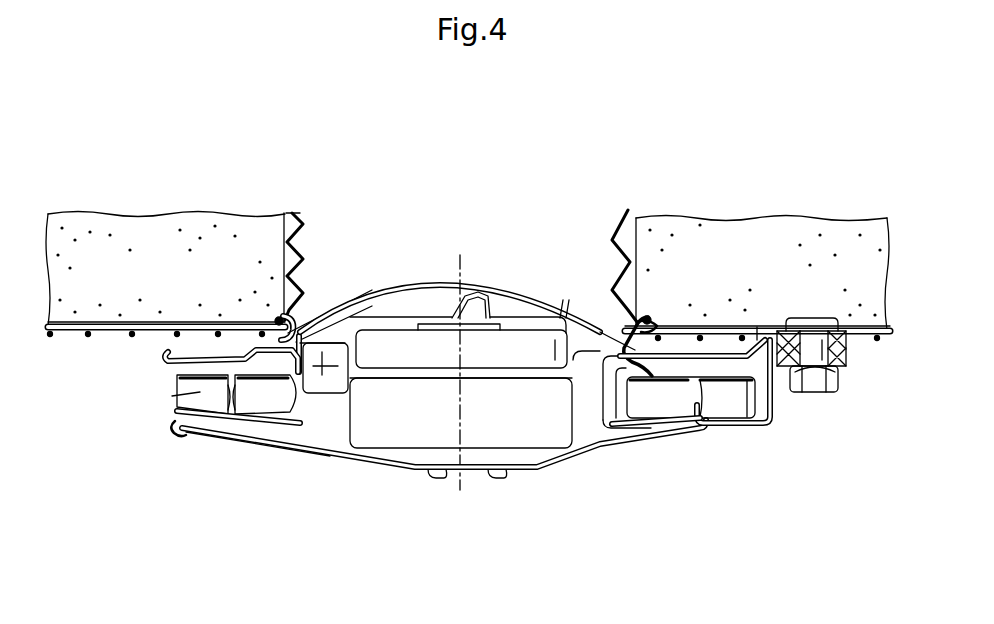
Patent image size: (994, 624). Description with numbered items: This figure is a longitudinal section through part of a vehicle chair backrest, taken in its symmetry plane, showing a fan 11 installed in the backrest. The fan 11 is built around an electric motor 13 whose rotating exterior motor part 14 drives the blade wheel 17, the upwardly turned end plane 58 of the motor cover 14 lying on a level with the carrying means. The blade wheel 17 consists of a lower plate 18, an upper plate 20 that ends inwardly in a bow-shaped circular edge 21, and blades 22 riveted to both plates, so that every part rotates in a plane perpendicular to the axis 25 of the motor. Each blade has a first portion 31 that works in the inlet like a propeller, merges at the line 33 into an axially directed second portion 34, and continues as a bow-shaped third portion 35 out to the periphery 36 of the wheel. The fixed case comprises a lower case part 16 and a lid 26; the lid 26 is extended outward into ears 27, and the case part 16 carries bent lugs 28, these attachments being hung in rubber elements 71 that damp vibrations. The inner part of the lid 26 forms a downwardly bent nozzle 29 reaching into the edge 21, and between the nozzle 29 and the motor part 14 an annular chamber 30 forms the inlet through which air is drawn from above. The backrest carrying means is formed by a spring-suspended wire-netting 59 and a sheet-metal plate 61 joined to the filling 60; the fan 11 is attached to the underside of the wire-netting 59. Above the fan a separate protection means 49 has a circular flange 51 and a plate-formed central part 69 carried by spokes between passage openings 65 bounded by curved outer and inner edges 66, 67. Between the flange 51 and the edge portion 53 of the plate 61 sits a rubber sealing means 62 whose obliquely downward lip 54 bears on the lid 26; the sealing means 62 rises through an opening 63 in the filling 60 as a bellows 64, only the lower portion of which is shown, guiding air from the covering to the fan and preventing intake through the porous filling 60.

The fan 11 is at (423, 507).
The electric motor 13 is at (505, 430).
The exterior motor part 14 is at (385, 419).
The lower case part 16 is at (572, 462).
The blade wheel 17 is at (644, 427).
The lower plate 18 is at (196, 420).
The upper plate 20 is at (214, 400).
The circular edge 21 is at (268, 402).
The blades 22 is at (286, 405).
The axis 25 is at (462, 266).
The lid 26 is at (723, 327).
The ears 27 is at (758, 327).
The lugs 28 is at (767, 400).
The nozzle 29 is at (313, 318).
The annular chamber 30 is at (326, 345).
The first blade portion 31 is at (318, 370).
The line 33 is at (291, 415).
The second blade portion 34 is at (323, 395).
The third blade portion 35 is at (240, 420).
The periphery 36 is at (170, 398).
The protection means 49 is at (433, 291).
The flange 51 is at (652, 318).
The edge portion 53 is at (678, 327).
The lip 54 is at (685, 428).
The end plane 58 is at (513, 330).
The wire-netting 59 is at (85, 336).
The filling 60 is at (810, 233).
The sheet-metal plate 61 is at (150, 338).
The sealing means 62 is at (603, 443).
The opening 63 is at (284, 312).
The bellows 64 is at (292, 240).
The passage openings 65 is at (346, 315).
The outer edge 66 is at (633, 318).
The inner edge 67 is at (590, 343).
The central part 69 is at (405, 285).
The rubber elements 71 is at (847, 358).